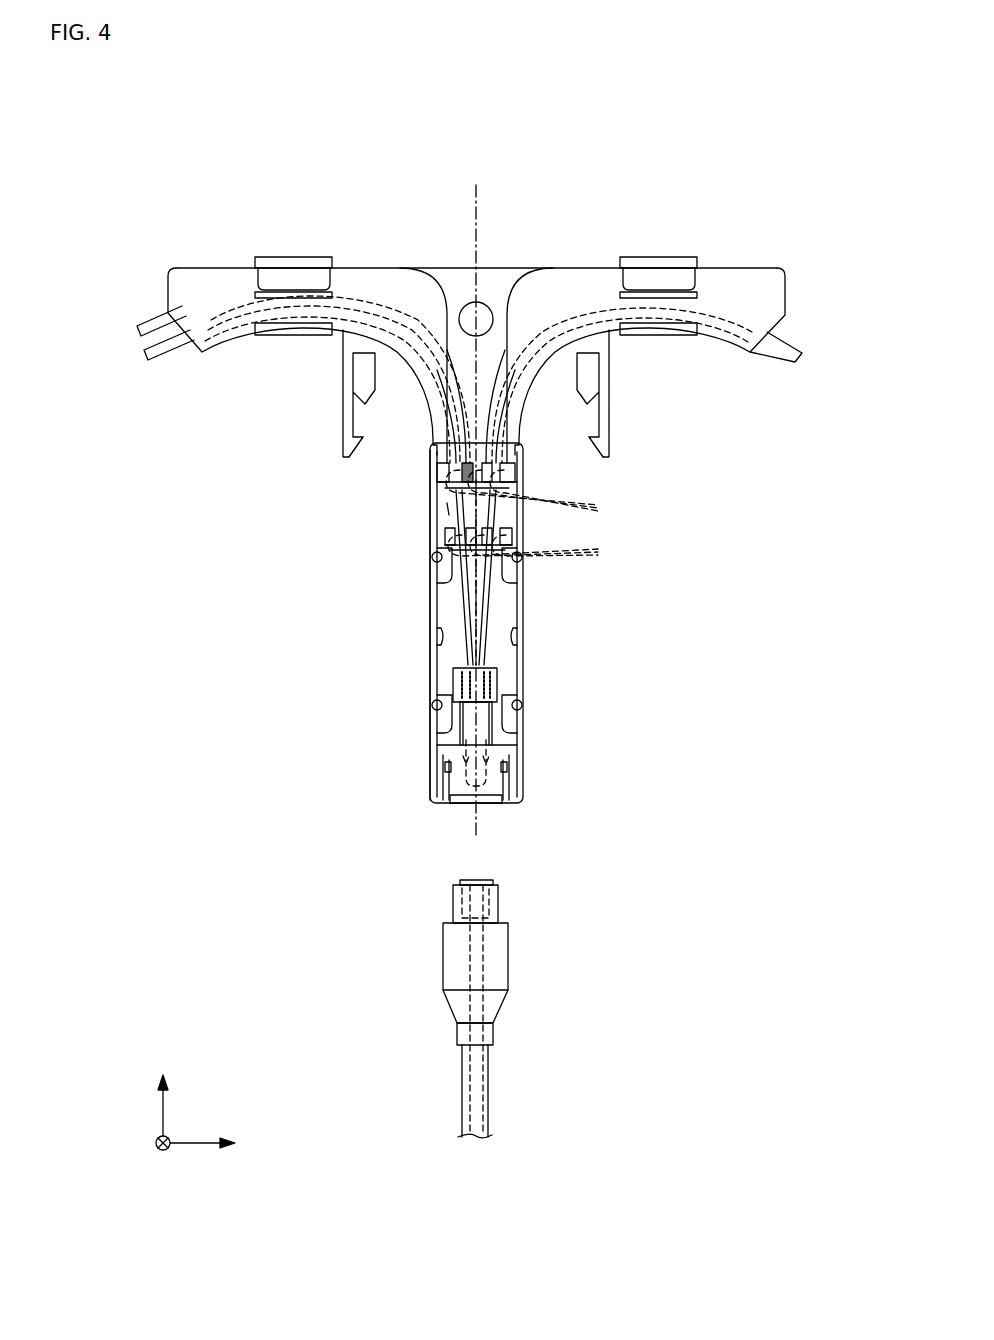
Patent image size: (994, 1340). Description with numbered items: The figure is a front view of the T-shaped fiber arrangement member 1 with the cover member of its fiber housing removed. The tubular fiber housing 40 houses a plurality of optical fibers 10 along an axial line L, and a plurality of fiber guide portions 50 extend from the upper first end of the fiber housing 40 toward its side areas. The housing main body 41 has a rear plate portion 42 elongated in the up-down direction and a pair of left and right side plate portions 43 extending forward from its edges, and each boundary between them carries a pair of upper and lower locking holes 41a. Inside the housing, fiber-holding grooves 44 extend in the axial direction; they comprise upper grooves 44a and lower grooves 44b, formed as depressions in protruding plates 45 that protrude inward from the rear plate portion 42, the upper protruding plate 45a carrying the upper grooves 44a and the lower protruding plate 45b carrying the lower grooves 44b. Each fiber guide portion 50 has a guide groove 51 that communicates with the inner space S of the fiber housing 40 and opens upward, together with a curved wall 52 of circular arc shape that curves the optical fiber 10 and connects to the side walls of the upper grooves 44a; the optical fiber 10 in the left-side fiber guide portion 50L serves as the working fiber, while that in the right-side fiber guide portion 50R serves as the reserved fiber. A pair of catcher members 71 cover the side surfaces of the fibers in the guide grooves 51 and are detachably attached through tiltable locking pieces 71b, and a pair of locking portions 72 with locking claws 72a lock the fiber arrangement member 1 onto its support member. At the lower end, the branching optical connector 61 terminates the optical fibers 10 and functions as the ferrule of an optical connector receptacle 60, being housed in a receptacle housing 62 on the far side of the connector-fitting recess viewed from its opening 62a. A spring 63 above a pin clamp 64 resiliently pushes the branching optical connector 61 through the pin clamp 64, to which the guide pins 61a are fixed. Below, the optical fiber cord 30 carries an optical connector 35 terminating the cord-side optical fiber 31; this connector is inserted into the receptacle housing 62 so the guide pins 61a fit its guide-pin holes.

The fiber arrangement member 1 is at (735, 122).
The optical fibers 10 is at (138, 330).
The optical fiber cord 30 is at (508, 1009).
The cord-side optical fiber 31 is at (488, 1065).
The optical connector 35 is at (499, 903).
The fiber housing 40 is at (411, 811).
The housing main body 41 is at (451, 623).
The locking holes 41a is at (437, 566).
The rear plate portion 42 is at (447, 602).
The side plate portions 43 is at (430, 632).
The fiber-holding grooves 44 is at (564, 520).
The upper grooves 44a is at (564, 498).
The lower grooves 44b is at (565, 552).
The protruding plates 45 is at (391, 525).
The upper protruding plate 45a is at (437, 468).
The lower protruding plate 45b is at (440, 530).
The fiber guide portions 50 is at (461, 307).
The left-side fiber guide portion 50L is at (178, 275).
The right-side fiber guide portion 50R is at (767, 275).
The guide groove 51 is at (398, 288).
The curved wall 52 is at (247, 308).
The optical connector receptacle 60 is at (488, 761).
The branching optical connector 61 is at (488, 738).
The guide pins 61a is at (500, 772).
The receptacle housing 62 is at (439, 806).
The opening 62a is at (456, 805).
The spring 63 is at (447, 690).
The pin clamp 64 is at (463, 712).
The catcher members 71 is at (493, 243).
The locking piece 71b is at (308, 280).
The locking portions 72 is at (475, 393).
The locking claws 72a is at (366, 447).
The axial line L is at (481, 208).
The inner space S is at (446, 509).